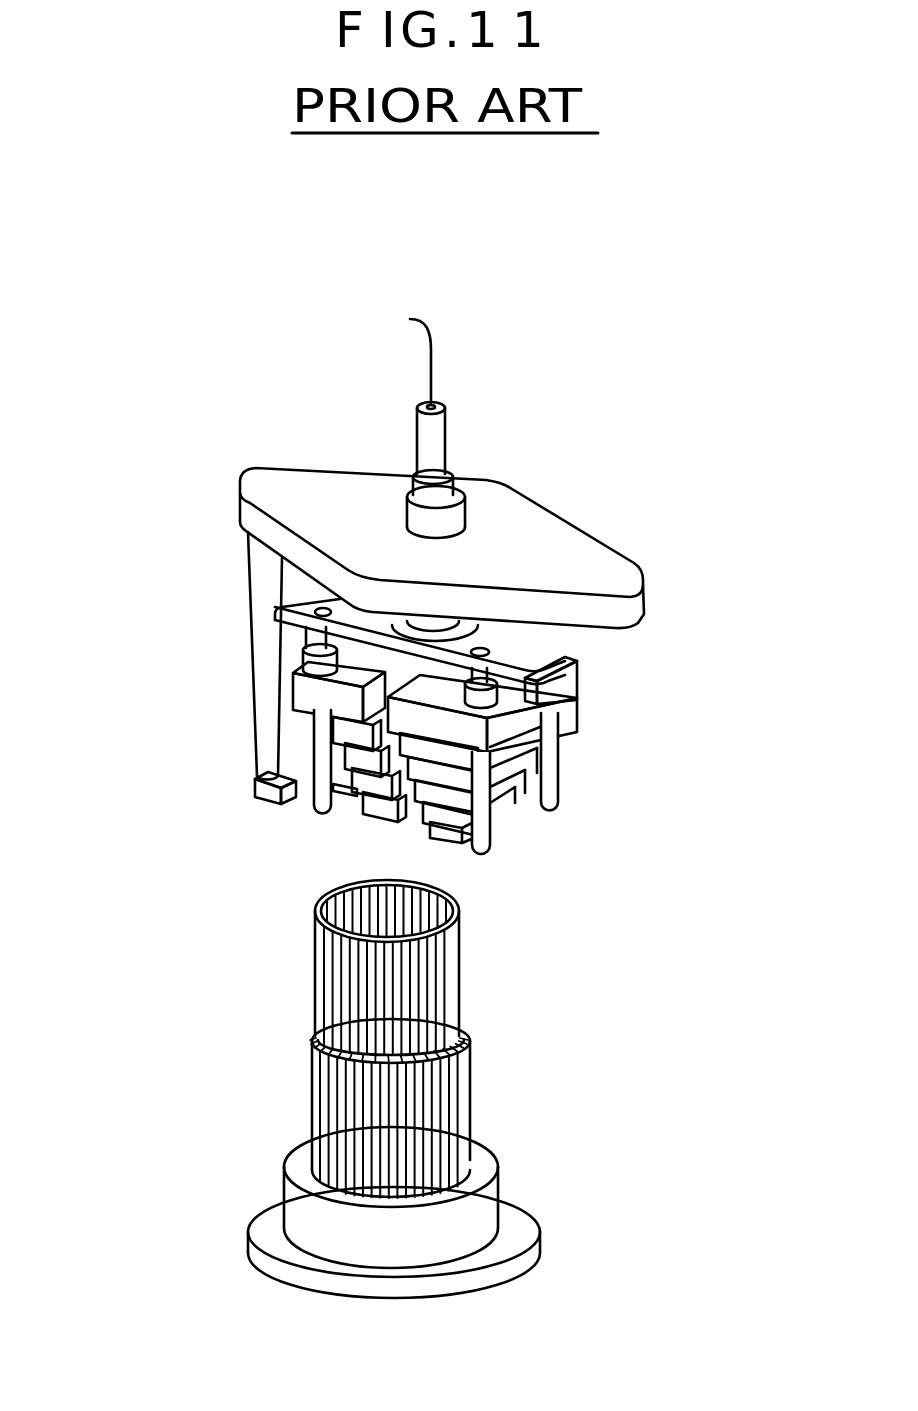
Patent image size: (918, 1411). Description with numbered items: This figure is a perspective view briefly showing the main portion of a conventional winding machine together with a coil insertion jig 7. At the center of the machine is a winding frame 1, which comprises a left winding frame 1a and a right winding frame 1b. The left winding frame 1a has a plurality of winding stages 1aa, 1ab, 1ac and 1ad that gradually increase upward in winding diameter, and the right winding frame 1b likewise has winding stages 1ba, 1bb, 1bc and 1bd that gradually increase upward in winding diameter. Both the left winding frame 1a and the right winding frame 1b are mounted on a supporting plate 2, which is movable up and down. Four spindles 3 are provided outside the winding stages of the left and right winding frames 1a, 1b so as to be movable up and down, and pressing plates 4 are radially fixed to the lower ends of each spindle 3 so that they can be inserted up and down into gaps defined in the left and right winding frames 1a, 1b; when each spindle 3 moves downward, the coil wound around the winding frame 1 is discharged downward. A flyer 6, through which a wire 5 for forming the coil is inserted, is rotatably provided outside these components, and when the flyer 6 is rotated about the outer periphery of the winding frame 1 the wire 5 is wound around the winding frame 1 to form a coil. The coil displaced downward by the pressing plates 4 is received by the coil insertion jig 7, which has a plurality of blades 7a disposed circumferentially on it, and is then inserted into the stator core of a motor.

The winding frame 1 is at (650, 763).
The left winding frame 1a is at (178, 785).
The winding stage 1aa is at (377, 820).
The winding stage 1ab is at (365, 792).
The winding stage 1ac is at (352, 787).
The winding stage 1ad is at (342, 753).
The right winding frame 1b is at (715, 888).
The winding stage 1ba is at (500, 803).
The winding stage 1bb is at (510, 777).
The winding stage 1bc is at (533, 760).
The winding stage 1bd is at (552, 748).
The supporting plate 2 is at (565, 677).
The spindle 3 is at (320, 735).
The pressing plate 4 is at (340, 800).
The wire 5 is at (433, 370).
The flyer 6 is at (258, 602).
The coil insertion jig 7 is at (477, 1077).
The blade 7a is at (462, 972).